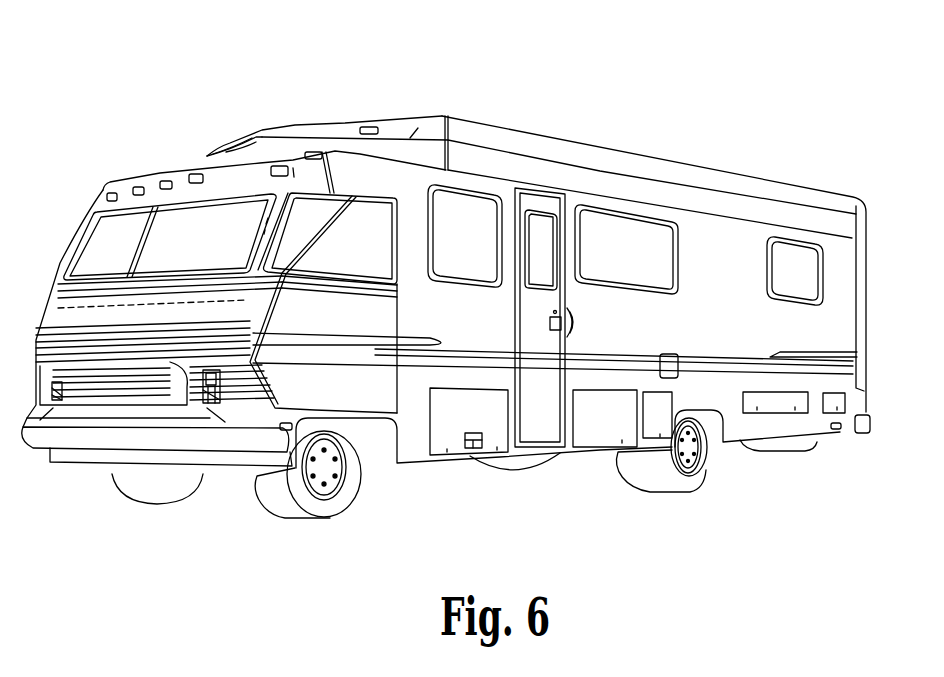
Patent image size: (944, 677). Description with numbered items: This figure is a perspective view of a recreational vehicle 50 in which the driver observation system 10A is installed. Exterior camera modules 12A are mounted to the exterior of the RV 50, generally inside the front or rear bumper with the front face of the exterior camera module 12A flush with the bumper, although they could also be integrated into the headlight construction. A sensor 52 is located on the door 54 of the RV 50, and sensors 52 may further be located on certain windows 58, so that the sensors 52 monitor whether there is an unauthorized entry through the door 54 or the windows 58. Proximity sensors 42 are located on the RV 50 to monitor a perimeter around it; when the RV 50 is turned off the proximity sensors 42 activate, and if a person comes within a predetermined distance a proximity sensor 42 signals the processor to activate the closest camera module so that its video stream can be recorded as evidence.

The observation system 10A is at (819, 65).
The recreational vehicle 50 is at (152, 71).
The exterior camera module 12A is at (205, 403).
The proximity sensor 42 is at (477, 449).
The sensor 52 is at (800, 237).
The door 54 is at (537, 428).
The window 58 is at (815, 272).